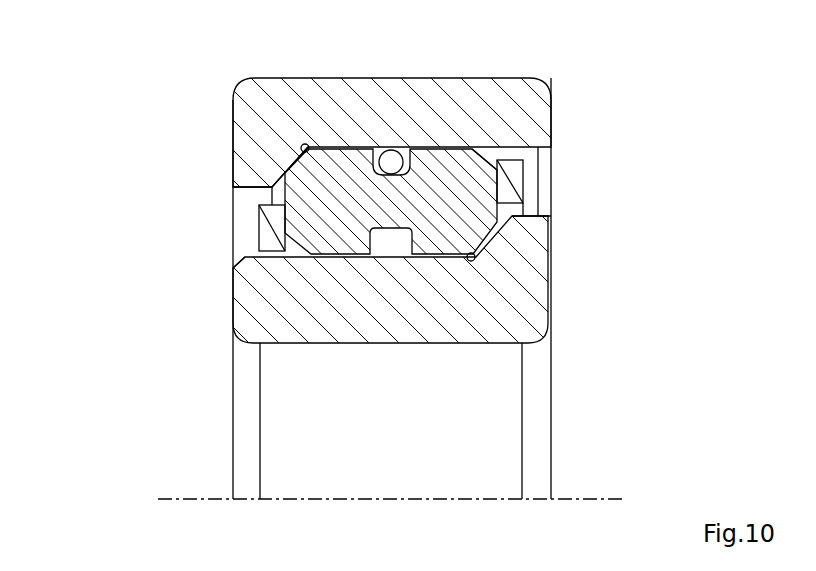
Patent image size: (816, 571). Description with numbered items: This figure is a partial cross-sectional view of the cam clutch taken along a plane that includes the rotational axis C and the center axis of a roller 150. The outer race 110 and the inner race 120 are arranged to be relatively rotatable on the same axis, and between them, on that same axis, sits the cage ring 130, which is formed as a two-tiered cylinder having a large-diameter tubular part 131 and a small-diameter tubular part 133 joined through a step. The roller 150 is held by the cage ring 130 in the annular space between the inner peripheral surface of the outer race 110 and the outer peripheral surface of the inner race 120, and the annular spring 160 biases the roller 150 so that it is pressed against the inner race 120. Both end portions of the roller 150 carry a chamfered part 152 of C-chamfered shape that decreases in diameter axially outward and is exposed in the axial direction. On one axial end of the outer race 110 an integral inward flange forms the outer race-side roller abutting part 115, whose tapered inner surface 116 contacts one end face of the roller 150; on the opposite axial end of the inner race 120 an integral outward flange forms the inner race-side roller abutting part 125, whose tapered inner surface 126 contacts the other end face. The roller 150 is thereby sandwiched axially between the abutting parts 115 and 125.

The outer race 110 is at (246, 117).
The outer race-side roller abutting part 115 is at (263, 187).
The inner surface 116 is at (303, 145).
The inner race 120 is at (510, 298).
The inner race-side roller abutting part 125 is at (545, 207).
The inner surface 126 is at (468, 257).
The cage ring 130 is at (513, 157).
The large-diameter tubular part 131 is at (518, 181).
The small-diameter tubular part 133 is at (270, 235).
The roller 150 is at (333, 244).
The chamfered part 152 is at (494, 148).
The annular spring 160 is at (388, 150).
The rotational axis C is at (165, 497).